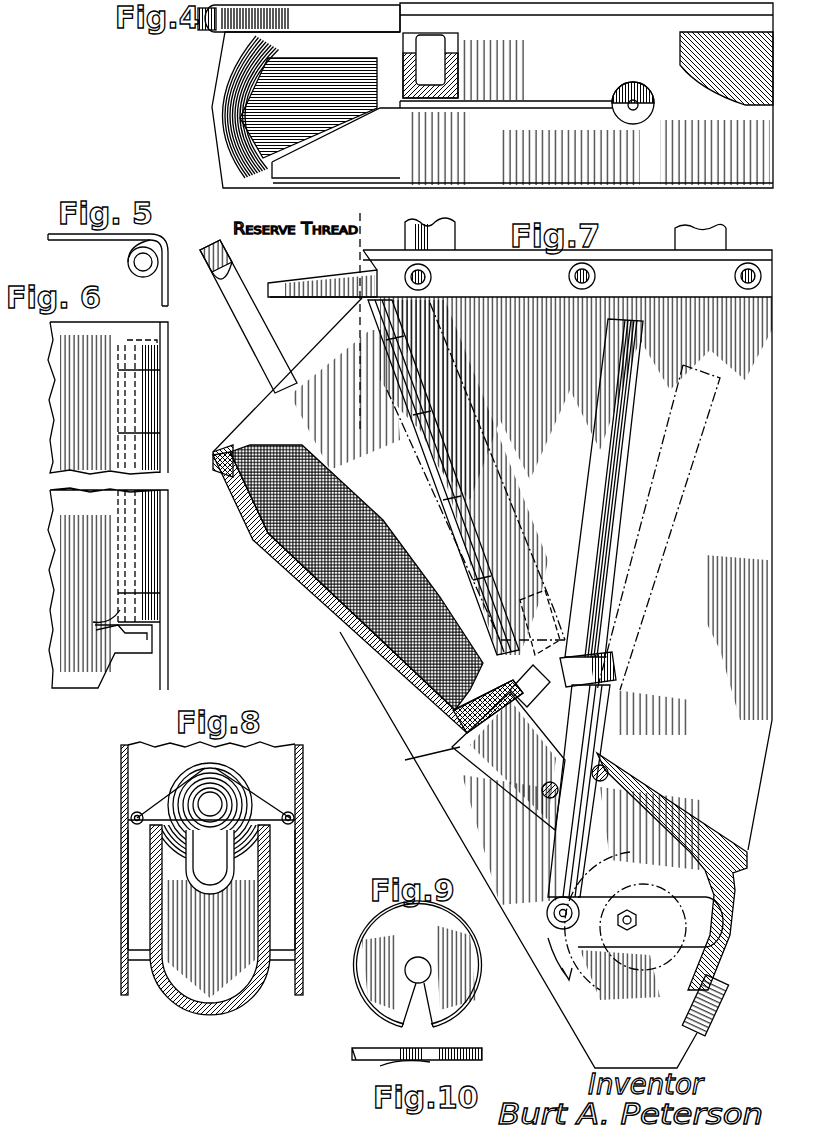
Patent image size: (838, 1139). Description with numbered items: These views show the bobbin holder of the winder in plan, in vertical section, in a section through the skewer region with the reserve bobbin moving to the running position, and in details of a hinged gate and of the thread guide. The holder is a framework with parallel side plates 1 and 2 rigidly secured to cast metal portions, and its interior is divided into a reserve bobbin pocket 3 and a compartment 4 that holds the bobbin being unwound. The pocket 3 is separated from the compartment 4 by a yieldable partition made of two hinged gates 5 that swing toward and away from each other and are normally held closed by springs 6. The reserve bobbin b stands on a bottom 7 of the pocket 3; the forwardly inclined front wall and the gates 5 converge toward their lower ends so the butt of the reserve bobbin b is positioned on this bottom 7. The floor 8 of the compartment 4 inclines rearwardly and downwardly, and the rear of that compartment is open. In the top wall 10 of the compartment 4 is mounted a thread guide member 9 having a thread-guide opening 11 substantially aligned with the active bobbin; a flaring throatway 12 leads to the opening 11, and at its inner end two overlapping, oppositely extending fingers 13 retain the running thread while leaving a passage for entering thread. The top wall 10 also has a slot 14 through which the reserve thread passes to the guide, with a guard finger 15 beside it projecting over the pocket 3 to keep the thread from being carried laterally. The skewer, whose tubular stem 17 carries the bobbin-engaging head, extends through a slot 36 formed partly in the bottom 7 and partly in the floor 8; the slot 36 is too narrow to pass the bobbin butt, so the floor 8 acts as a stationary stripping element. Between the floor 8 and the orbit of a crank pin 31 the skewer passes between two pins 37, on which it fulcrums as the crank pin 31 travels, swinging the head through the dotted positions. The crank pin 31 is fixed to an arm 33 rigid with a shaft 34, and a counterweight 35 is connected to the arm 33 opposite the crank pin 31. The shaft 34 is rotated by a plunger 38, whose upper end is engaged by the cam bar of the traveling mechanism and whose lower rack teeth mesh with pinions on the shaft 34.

In FIG. 8, the side plate 1 is at (121, 795).
In FIG. 7, the side plate 1 is at (768, 505).
In FIG. 8, the side plate 2 is at (303, 790).
In FIG. 4, the reserve bobbin pocket 3 is at (237, 135).
In FIG. 8, the reserve bobbin pocket 3 is at (238, 920).
In FIG. 7, the reserve bobbin pocket 3 is at (368, 552).
In FIG. 7, the compartment 4 is at (631, 608).
In FIG. 5, the hinged gates 5 is at (78, 236).
In FIG. 6, the hinged gates 5 is at (55, 410).
In FIG. 8, the hinged gates 5 is at (170, 790).
In FIG. 7, the hinged gates 5 is at (540, 590).
In FIG. 5, the springs 6 is at (156, 243).
In FIG. 6, the springs 6 is at (120, 642).
In FIG. 4, the bottom 7 is at (175, 105).
In FIG. 8, the bottom 7 is at (262, 855).
In FIG. 7, the bottom 7 is at (455, 722).
In FIG. 7, the floor 8 is at (630, 775).
In FIG. 4, the thread guide member 9 is at (636, 95).
In FIG. 9, the thread guide member 9 is at (440, 925).
In FIG. 10, the thread guide member 9 is at (483, 1053).
In FIG. 4, the top wall 10 is at (532, 160).
In FIG. 4, the thread-guide opening 11 is at (645, 108).
In FIG. 9, the flaring throatway 12 is at (450, 1028).
In FIG. 9, the fingers 13 is at (419, 987).
In FIG. 10, the fingers 13 is at (470, 1064).
In FIG. 4, the slot 14 is at (527, 102).
In FIG. 4, the guard finger 15 is at (320, 163).
In FIG. 7, the guard finger 15 is at (290, 283).
In FIG. 7, the tubular stem 17 is at (600, 713).
In FIG. 7, the crank pin 31 is at (546, 913).
In FIG. 7, the arm 33 is at (583, 940).
In FIG. 7, the shaft 34 is at (650, 920).
In FIG. 7, the counterweight 35 is at (712, 997).
In FIG. 8, the slot 36 is at (210, 862).
In FIG. 7, the slot 36 is at (478, 750).
In FIG. 7, the pins 37 is at (604, 766).
In FIG. 4, the plunger 38 is at (290, 18).
In FIG. 7, the plunger 38 is at (245, 352).
In FIG. 7, the lever phantom position a is at (633, 390).
In FIG. 8, the reserve bobbin b is at (262, 782).
In FIG. 7, the reserve bobbin b is at (388, 395).